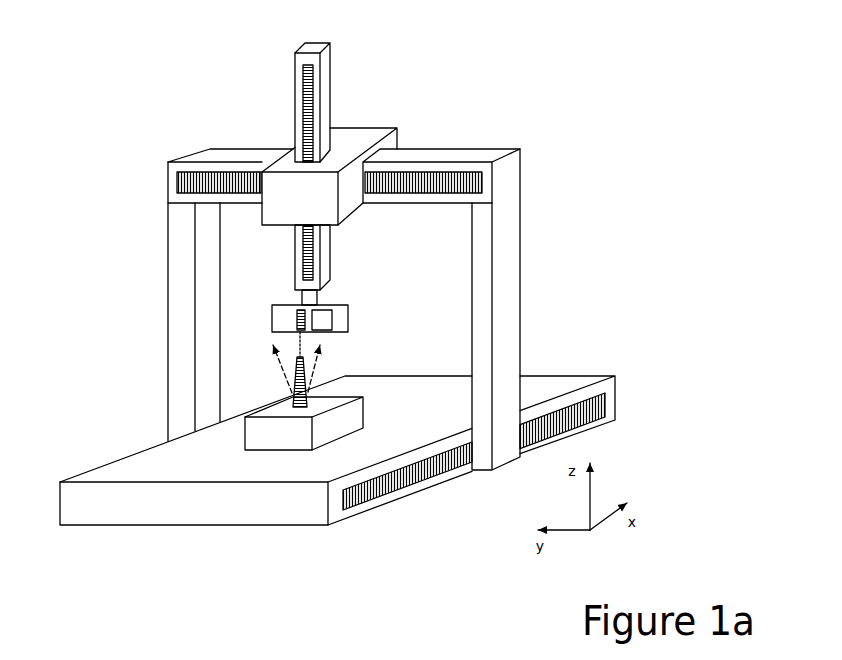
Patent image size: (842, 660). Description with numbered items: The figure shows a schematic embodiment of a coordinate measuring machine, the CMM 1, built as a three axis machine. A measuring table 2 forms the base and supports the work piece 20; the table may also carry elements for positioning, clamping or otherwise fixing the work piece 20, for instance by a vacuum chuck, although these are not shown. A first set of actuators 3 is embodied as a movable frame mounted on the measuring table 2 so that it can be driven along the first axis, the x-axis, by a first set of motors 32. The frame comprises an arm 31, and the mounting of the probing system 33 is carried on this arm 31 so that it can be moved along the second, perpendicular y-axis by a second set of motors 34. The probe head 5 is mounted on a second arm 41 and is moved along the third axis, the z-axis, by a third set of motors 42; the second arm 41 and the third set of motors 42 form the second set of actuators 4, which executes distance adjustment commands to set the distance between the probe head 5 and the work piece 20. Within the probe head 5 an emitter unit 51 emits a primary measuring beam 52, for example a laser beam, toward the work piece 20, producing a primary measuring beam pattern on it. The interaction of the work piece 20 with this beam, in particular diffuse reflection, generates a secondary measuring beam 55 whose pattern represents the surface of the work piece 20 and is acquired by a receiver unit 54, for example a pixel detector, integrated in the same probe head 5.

The CMM 1 is at (149, 100).
The measuring table 2 is at (408, 437).
The work piece 20 is at (245, 437).
The first set of actuators 3 is at (366, 271).
The arm 31 is at (467, 148).
The first set of motors 32 is at (605, 408).
The mounting of the probing system 33 is at (355, 128).
The second set of motors 34 is at (183, 173).
The second set of actuators 4 is at (331, 152).
The second arm 41 is at (327, 278).
The third set of motors 42 is at (315, 73).
The probe head 5 is at (279, 345).
The emitter unit 51 is at (297, 327).
The primary measuring beam 52 is at (298, 358).
The receiver unit 54 is at (332, 323).
The secondary measuring beam 55 is at (305, 365).